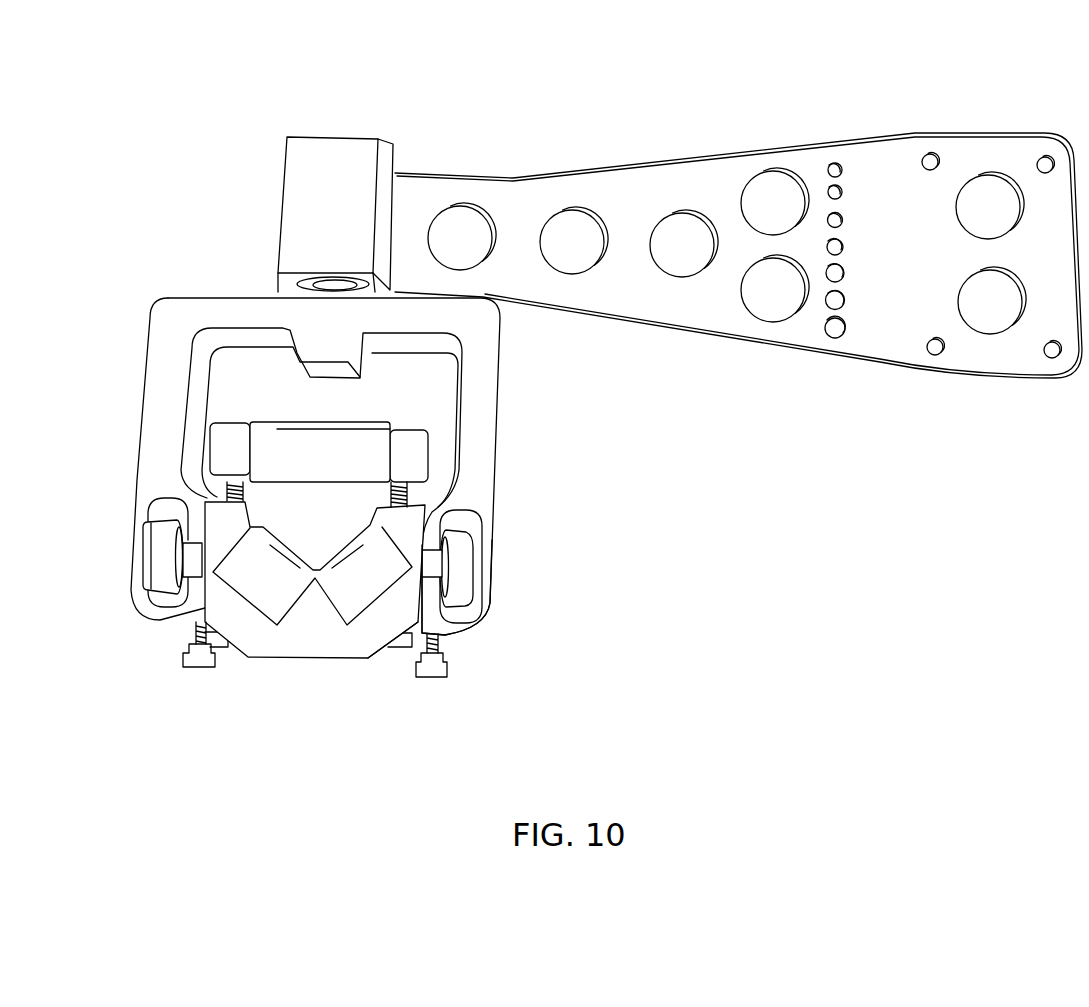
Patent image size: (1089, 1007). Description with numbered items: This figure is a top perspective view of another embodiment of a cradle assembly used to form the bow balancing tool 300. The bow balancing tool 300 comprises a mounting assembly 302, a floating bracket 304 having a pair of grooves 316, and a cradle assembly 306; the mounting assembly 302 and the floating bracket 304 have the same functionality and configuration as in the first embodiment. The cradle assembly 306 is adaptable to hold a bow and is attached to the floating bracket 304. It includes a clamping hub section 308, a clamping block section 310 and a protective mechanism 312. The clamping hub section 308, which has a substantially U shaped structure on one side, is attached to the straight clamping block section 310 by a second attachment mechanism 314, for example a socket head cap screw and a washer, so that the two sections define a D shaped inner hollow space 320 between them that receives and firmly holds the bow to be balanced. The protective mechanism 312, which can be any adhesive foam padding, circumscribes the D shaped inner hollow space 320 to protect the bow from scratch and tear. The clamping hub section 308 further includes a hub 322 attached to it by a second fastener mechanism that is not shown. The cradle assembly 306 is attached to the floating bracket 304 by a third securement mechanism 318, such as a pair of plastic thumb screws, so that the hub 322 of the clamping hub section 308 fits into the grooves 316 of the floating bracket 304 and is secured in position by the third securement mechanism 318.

The bow balancing tool 300 is at (607, 92).
The mounting assembly 302 is at (778, 140).
The floating bracket 304 is at (193, 287).
The cradle assembly 306 is at (305, 663).
The clamping hub section 308 is at (377, 650).
The clamping block section 310 is at (230, 432).
The protective mechanism 312 is at (255, 593).
The second attachment mechanism 314 is at (218, 637).
The grooves 316 is at (460, 515).
The third securement mechanism 318 is at (443, 660).
The D shaped inner hollow space 320 is at (276, 505).
The hub 322 is at (460, 577).